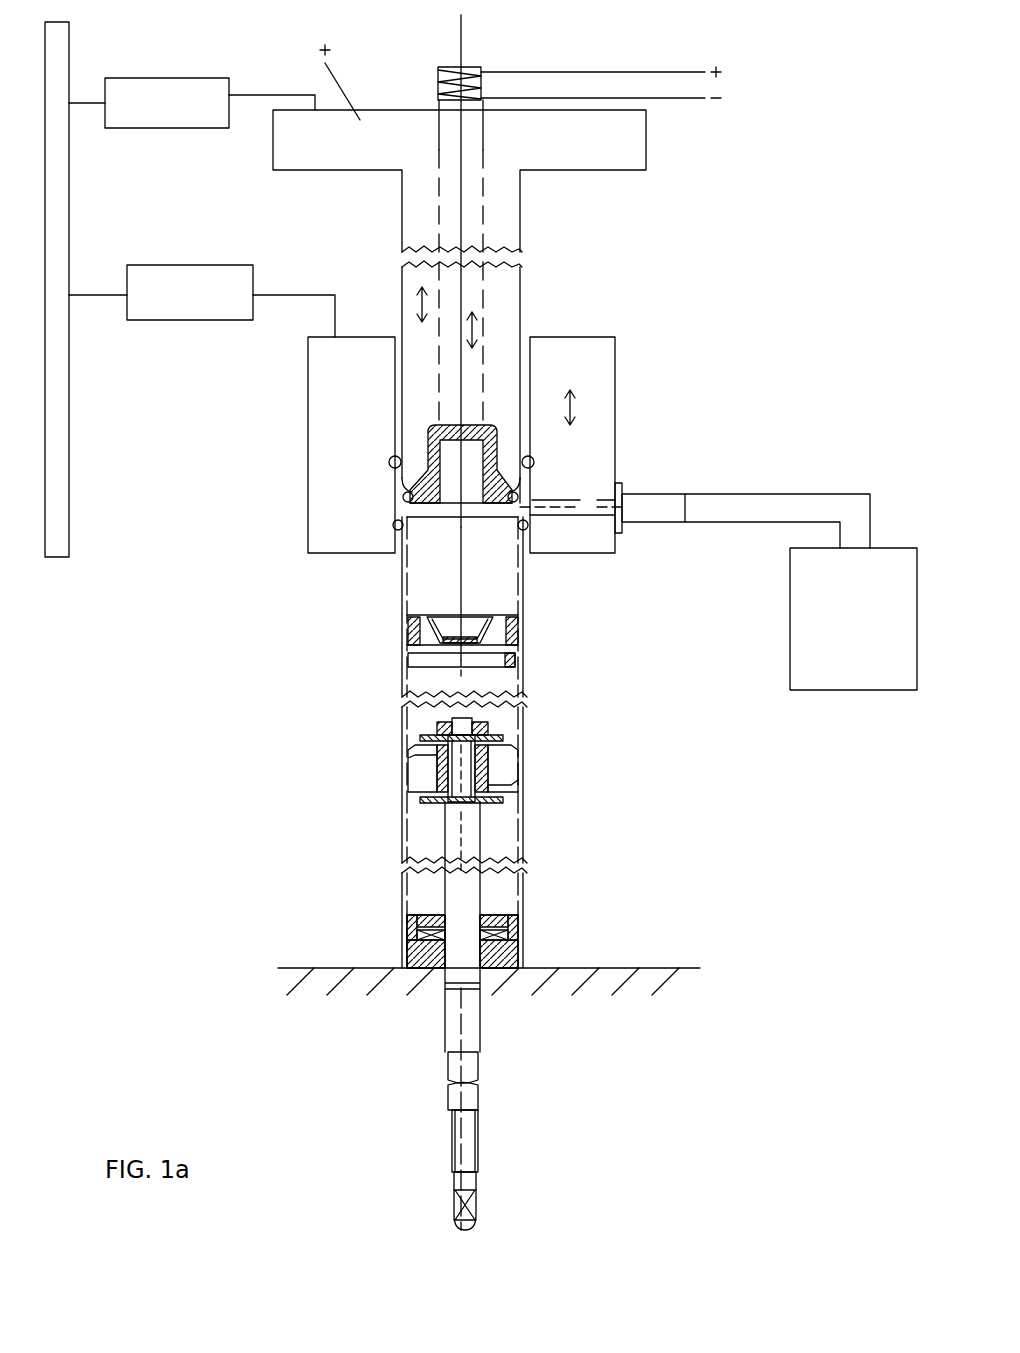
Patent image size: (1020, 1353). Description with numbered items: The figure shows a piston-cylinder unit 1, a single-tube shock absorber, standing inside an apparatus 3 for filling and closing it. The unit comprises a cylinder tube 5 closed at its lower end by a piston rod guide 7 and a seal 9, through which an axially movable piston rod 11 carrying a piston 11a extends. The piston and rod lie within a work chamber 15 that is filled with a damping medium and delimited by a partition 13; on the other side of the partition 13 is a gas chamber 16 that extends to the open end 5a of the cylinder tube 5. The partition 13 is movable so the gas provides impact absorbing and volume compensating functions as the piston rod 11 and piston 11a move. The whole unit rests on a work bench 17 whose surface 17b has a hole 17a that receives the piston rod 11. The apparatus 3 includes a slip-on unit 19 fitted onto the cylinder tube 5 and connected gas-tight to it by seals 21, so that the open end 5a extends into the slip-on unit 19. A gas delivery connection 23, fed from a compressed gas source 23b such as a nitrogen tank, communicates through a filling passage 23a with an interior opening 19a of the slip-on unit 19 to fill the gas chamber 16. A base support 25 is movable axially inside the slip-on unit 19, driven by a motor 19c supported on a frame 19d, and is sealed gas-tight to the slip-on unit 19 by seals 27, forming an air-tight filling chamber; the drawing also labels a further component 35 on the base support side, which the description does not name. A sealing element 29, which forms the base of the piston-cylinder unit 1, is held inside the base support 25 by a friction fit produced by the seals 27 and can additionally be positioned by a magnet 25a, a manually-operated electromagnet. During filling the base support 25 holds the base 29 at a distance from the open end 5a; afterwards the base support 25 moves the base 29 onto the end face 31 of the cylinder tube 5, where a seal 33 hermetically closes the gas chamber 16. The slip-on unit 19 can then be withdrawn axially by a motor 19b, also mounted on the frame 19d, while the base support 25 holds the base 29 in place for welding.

The piston-cylinder unit 1 is at (520, 768).
The apparatus 3 is at (260, 606).
The cylinder tube 5 is at (525, 688).
The open end 5a is at (432, 560).
The piston rod guide 7 is at (515, 953).
The seal 9 is at (497, 922).
The piston rod 11 is at (470, 845).
The piston 11a is at (437, 765).
The partition 13 is at (427, 645).
The work chamber 15 is at (510, 724).
The gas chamber 16 is at (498, 593).
The work bench 17 is at (598, 995).
The hole 17a is at (483, 973).
The surface 17b is at (552, 973).
The slip-on unit 19 is at (308, 535).
The interior opening 19a is at (532, 372).
The motor 19b is at (180, 318).
The motor 19c is at (165, 115).
The frame 19d is at (55, 540).
The seals 21 is at (400, 520).
The gas delivery connection 23 is at (670, 492).
The filling passage 23a is at (590, 512).
The compressed gas source 23b is at (845, 675).
The base support 25 is at (472, 232).
The magnet 25a is at (507, 52).
The seals 27 is at (392, 460).
The sealing element 29 is at (530, 478).
The end face 31 is at (525, 512).
The seal 33 is at (405, 492).
The tube 35 is at (498, 308).